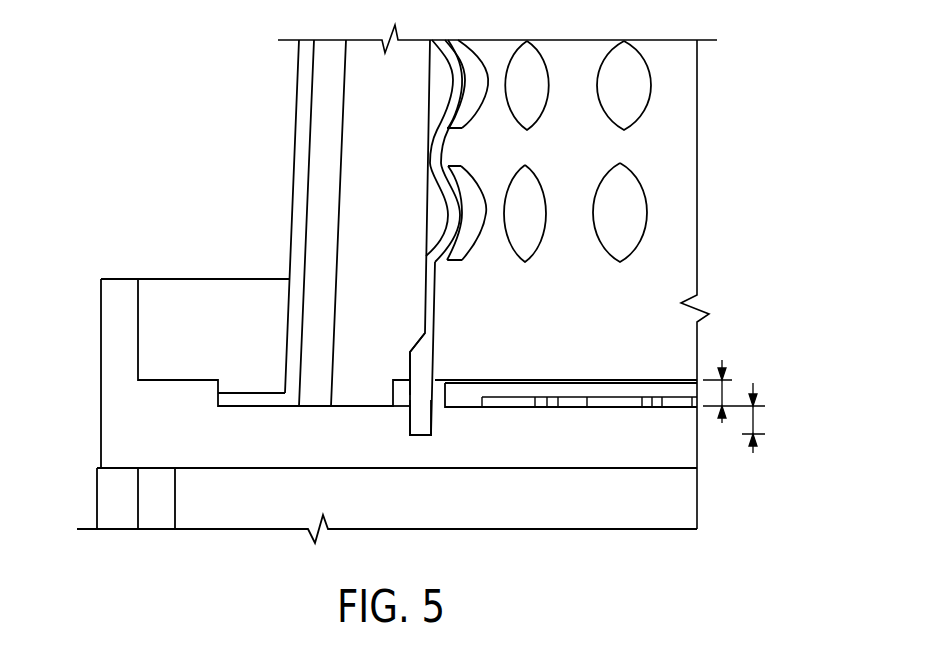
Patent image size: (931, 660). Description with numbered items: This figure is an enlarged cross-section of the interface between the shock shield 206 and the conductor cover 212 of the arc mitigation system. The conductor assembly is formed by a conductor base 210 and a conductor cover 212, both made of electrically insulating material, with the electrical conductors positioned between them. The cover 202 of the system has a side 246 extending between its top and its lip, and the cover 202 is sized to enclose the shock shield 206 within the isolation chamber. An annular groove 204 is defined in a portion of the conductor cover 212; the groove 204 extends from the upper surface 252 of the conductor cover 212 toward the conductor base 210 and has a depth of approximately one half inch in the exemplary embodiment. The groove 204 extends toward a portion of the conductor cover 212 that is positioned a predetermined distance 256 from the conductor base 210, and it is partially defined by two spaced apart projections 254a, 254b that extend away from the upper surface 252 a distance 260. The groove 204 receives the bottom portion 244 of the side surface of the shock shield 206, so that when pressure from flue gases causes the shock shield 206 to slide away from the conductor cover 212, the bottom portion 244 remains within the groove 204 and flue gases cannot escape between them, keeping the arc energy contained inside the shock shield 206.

The cover 202 is at (297, 120).
The annular groove 204 is at (404, 433).
The shock shield 206 is at (433, 153).
The conductor base 210 is at (497, 498).
The conductor cover 212 is at (122, 412).
The bottom portion 244 is at (435, 355).
The side 246 is at (393, 397).
The upper surface 252 is at (613, 405).
The projection 254a is at (409, 395).
The projection 254b is at (433, 433).
The predetermined distance 256 is at (753, 420).
The distance 260 is at (722, 393).